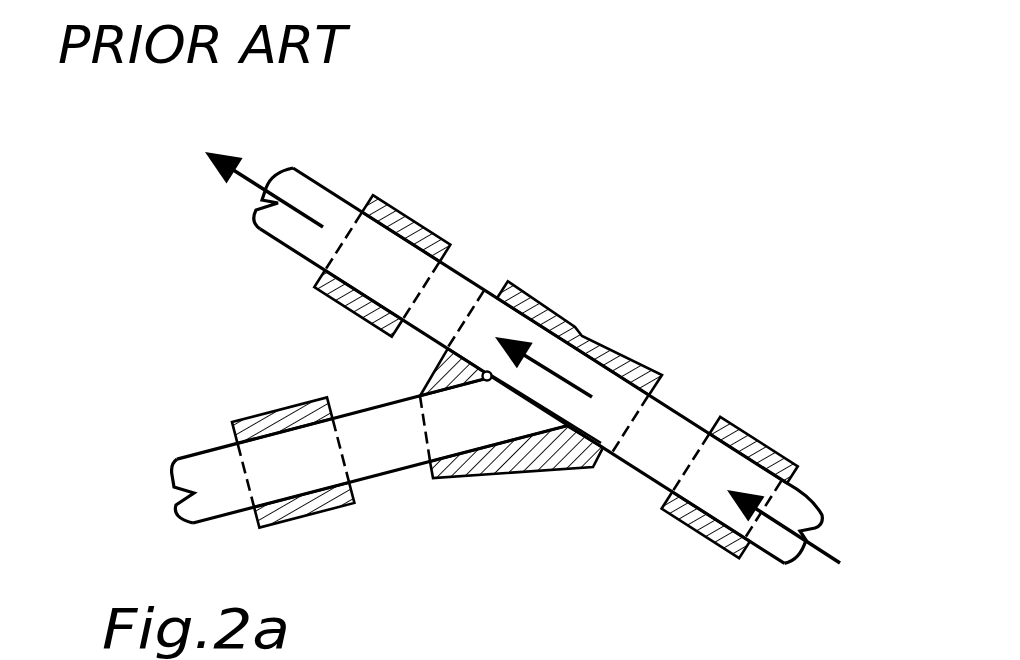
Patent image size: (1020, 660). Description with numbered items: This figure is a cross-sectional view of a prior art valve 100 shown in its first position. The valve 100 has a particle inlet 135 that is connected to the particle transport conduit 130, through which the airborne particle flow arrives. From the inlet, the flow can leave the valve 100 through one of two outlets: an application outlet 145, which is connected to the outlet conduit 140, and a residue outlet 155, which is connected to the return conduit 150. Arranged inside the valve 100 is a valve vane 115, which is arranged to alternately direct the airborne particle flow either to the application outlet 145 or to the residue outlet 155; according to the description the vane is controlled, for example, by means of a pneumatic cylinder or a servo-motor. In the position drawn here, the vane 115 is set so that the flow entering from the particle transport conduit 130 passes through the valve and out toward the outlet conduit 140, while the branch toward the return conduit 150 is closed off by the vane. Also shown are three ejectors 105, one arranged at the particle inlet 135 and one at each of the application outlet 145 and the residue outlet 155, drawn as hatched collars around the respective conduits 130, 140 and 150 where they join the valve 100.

The valve 100 is at (580, 328).
The ejectors 105 is at (408, 228).
The valve vane 115 is at (522, 407).
The particle transport conduit 130 is at (670, 438).
The particle inlet 135 is at (623, 418).
The outlet conduit 140 is at (303, 237).
The application outlet 145 is at (480, 324).
The return conduit 150 is at (372, 455).
The residue outlet 155 is at (426, 433).